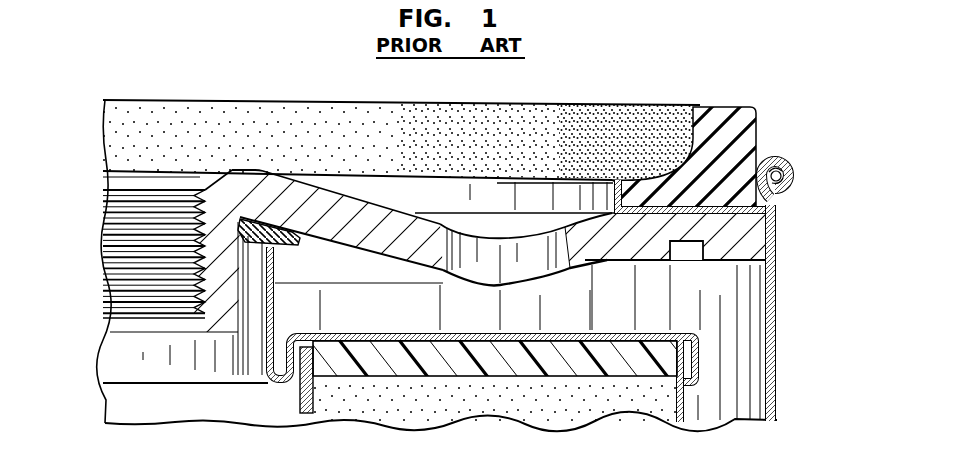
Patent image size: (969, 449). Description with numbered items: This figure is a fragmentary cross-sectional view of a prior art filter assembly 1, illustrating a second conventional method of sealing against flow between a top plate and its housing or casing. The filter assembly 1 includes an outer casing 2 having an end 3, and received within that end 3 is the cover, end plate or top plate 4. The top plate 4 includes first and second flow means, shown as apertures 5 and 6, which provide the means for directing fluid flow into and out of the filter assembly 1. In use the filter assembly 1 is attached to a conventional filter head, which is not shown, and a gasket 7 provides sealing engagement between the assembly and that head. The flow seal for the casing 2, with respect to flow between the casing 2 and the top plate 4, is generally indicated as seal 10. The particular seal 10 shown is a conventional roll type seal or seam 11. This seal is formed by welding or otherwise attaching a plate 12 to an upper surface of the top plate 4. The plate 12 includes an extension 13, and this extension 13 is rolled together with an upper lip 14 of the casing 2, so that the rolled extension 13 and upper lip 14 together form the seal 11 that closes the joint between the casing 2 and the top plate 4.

The filter assembly 1 is at (729, 78).
The outer casing 2 is at (782, 346).
The end 3 is at (778, 210).
The top plate 4 is at (618, 258).
The aperture 5 is at (467, 288).
The aperture 6 is at (147, 190).
The gasket 7 is at (590, 125).
The flow seal 10 is at (782, 150).
The roll type seal 11 is at (792, 171).
The plate 12 is at (720, 222).
The extension 13 is at (790, 167).
The upper lip 14 is at (781, 178).